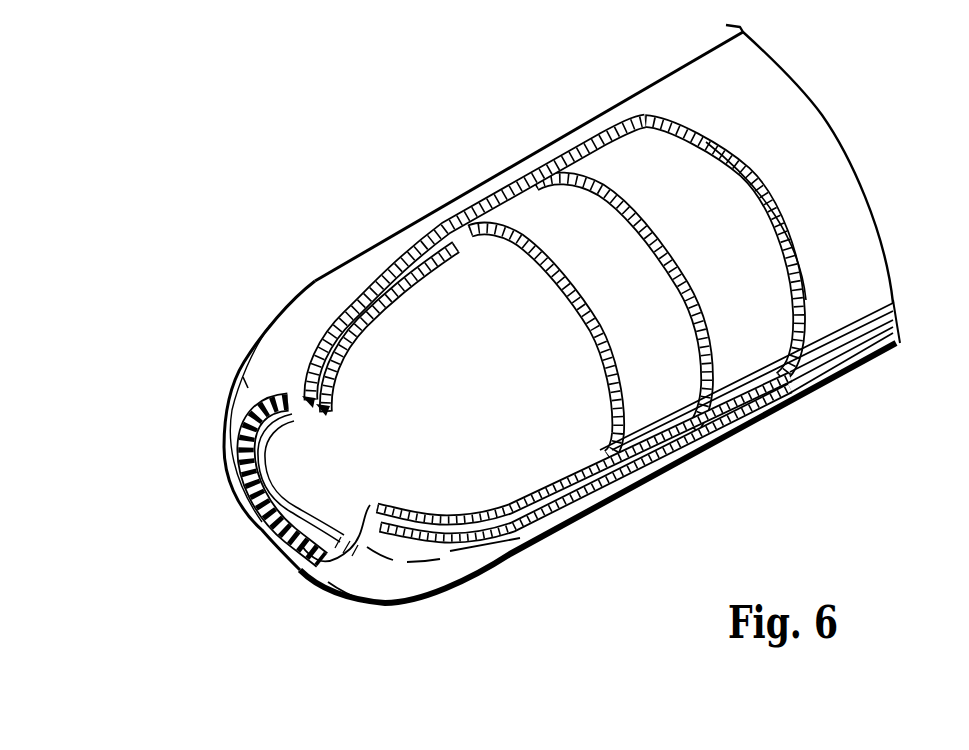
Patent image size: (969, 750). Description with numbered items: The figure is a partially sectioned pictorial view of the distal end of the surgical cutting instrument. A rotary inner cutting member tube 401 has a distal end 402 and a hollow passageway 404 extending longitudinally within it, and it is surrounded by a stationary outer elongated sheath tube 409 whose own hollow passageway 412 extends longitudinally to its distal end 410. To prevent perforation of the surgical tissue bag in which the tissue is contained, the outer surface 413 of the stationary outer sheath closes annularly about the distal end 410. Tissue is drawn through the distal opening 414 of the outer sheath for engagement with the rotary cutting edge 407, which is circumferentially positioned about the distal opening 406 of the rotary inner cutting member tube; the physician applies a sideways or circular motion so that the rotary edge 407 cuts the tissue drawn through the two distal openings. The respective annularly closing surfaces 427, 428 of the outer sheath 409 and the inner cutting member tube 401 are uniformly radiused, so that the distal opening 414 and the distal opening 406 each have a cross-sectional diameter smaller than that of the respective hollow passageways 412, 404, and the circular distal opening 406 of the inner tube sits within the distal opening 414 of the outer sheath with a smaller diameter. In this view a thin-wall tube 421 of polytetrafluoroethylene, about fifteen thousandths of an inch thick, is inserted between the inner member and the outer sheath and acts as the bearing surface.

The inner cutting member tube 401 is at (470, 521).
The distal end 402 is at (311, 600).
The hollow passageway 404 is at (495, 478).
The distal opening 406 is at (300, 502).
The rotary cutting edge 407 is at (322, 403).
The outer elongated sheath tube 409 is at (668, 92).
The distal end 410 is at (170, 468).
The hollow passageway 412 is at (371, 273).
The outer surface 413 is at (331, 283).
The distal opening 414 is at (300, 553).
The thin-wall tube 421 is at (753, 360).
The annularly closing surface 427 is at (238, 371).
The annularly closing surface 428 is at (304, 366).